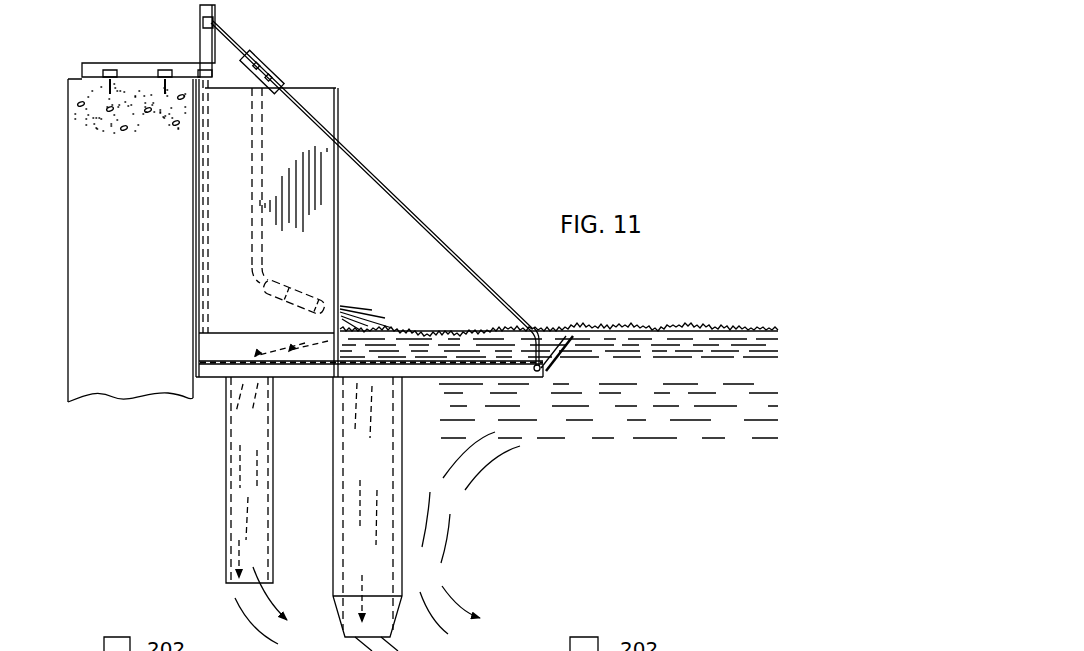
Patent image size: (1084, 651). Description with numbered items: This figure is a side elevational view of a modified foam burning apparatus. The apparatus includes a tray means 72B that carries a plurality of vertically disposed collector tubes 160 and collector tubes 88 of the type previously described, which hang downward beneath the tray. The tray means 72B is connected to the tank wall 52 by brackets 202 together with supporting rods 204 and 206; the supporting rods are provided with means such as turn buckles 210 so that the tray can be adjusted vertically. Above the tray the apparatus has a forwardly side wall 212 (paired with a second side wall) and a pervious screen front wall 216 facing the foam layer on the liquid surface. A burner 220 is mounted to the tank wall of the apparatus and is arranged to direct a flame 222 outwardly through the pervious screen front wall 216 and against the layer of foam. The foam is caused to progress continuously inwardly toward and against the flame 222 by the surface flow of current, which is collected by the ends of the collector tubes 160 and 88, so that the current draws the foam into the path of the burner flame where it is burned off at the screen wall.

The tank wall 52 is at (74, 165).
The brackets 202 is at (200, 12).
The supporting rod 204 is at (368, 178).
The turn buckles 210 is at (280, 75).
The forwardly side wall 212 is at (322, 101).
The pervious screen front wall 216 is at (340, 262).
The supporting rod 206 is at (212, 188).
The burner 220 is at (281, 276).
The flame 222 is at (360, 312).
The tray means 72B is at (518, 382).
The collector tubes 160 is at (226, 514).
The collector tubes 88 is at (405, 498).